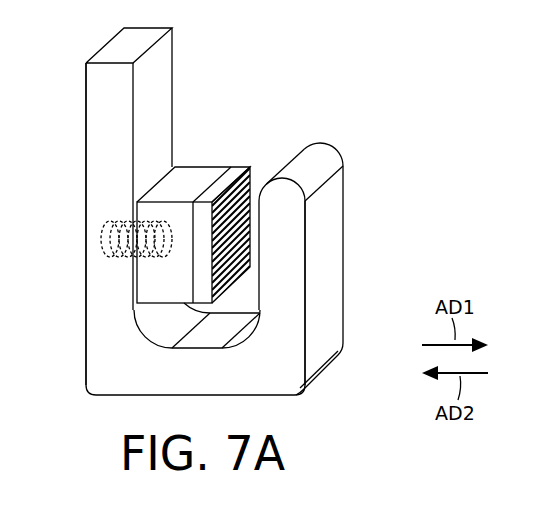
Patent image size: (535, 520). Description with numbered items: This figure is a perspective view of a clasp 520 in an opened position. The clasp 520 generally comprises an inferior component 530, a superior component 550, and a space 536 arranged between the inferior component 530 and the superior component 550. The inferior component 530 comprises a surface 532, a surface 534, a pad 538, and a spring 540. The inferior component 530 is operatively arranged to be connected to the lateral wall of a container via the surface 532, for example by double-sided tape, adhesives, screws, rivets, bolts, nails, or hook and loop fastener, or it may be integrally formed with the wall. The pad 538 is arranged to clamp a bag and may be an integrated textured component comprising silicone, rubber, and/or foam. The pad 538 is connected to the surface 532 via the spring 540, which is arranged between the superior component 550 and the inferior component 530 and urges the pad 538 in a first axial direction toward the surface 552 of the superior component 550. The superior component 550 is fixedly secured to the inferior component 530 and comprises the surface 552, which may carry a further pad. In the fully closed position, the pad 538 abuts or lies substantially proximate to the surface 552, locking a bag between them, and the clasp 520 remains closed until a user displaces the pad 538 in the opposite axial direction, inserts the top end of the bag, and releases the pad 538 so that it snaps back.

The clasp 520 is at (376, 90).
The inferior component 530 is at (86, 116).
The surface 532 is at (86, 176).
The surface 534 is at (162, 78).
The space 536 is at (233, 126).
The pad 538 is at (209, 172).
The spring 540 is at (108, 245).
The superior component 550 is at (323, 200).
The surface 552 is at (258, 245).